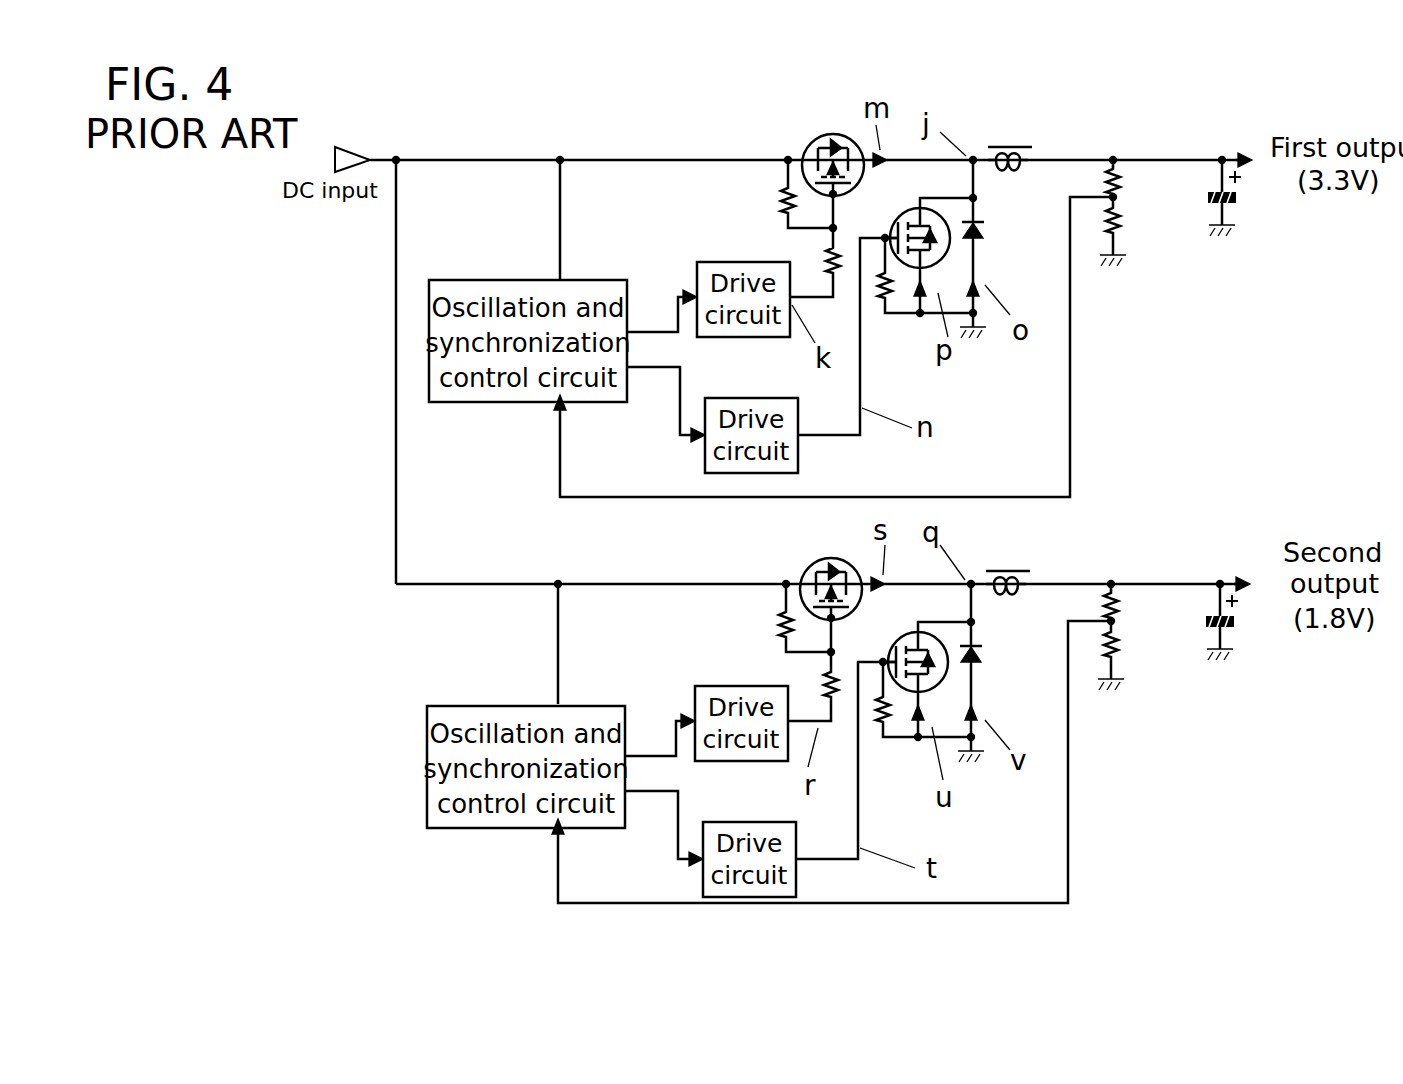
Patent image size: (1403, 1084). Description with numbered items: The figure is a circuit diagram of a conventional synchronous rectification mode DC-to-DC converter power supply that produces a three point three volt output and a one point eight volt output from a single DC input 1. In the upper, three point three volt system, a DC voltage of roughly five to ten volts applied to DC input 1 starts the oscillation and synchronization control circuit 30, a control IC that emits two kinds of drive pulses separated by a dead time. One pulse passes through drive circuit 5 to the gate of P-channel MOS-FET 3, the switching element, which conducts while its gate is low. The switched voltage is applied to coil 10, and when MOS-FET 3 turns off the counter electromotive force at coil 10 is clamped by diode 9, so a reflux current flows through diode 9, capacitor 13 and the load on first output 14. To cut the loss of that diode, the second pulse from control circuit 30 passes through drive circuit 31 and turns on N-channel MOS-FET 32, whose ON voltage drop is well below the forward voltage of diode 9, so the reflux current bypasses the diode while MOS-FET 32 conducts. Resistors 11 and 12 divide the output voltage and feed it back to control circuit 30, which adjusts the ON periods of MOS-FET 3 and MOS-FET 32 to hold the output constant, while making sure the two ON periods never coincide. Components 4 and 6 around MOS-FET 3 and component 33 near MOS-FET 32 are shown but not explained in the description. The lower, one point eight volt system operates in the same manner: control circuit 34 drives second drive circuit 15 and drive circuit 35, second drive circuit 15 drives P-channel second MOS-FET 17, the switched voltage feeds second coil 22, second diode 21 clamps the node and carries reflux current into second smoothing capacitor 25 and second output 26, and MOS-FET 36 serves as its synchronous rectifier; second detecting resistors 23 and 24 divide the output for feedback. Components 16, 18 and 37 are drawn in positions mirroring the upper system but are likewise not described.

The DC input 1 is at (335, 147).
The P-channel MOS-FET 3 is at (812, 145).
The resistor 4 is at (775, 196).
The drive circuit 5 is at (735, 260).
The resistor 6 is at (822, 262).
The diode 9 is at (993, 242).
The coil 10 is at (1010, 145).
The resistor 11 is at (1127, 177).
The resistor 12 is at (1127, 222).
The capacitor 13 is at (1243, 195).
The first output 14 is at (1255, 155).
The second drive circuit 15 is at (732, 703).
The resistor 16 is at (735, 622).
The second MOS-FET 17 is at (794, 572).
The resistor 18 is at (792, 677).
The second diode 21 is at (1004, 684).
The second coil 22 is at (1032, 561).
The second detecting resistor 23 is at (1147, 606).
The second detecting resistor 24 is at (1147, 652).
The second smoothing capacitor 25 is at (1263, 648).
The second output 26 is at (1264, 545).
The oscillation and synchronization control circuit 30 is at (490, 278).
The drive circuit 31 is at (800, 462).
The N-channel MOS-FET 32 is at (895, 222).
The resistor 33 is at (877, 300).
The oscillation and synchronization control circuit 34 is at (525, 735).
The drive circuit 35 is at (774, 860).
The synchronous rectifier transistor 36 is at (907, 642).
The resistor 37 is at (880, 762).